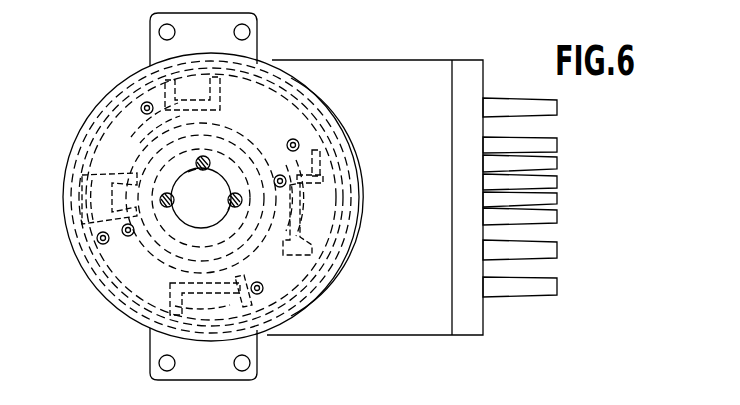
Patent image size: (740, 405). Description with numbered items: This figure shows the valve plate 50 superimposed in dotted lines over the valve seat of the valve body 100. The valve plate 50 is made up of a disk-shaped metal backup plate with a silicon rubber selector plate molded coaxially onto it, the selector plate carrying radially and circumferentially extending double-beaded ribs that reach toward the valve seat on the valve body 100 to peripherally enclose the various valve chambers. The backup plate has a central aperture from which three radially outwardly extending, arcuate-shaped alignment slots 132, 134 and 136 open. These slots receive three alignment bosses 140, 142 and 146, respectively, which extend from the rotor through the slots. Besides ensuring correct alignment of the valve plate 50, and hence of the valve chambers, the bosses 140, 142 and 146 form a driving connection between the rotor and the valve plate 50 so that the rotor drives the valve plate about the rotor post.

The valve plate 50 is at (127, 115).
The valve body 100 is at (342, 82).
The alignment slot 132 is at (238, 206).
The alignment slot 134 is at (196, 168).
The alignment slot 136 is at (164, 207).
The alignment boss 140 is at (243, 201).
The alignment boss 142 is at (203, 158).
The alignment boss 146 is at (201, 198).